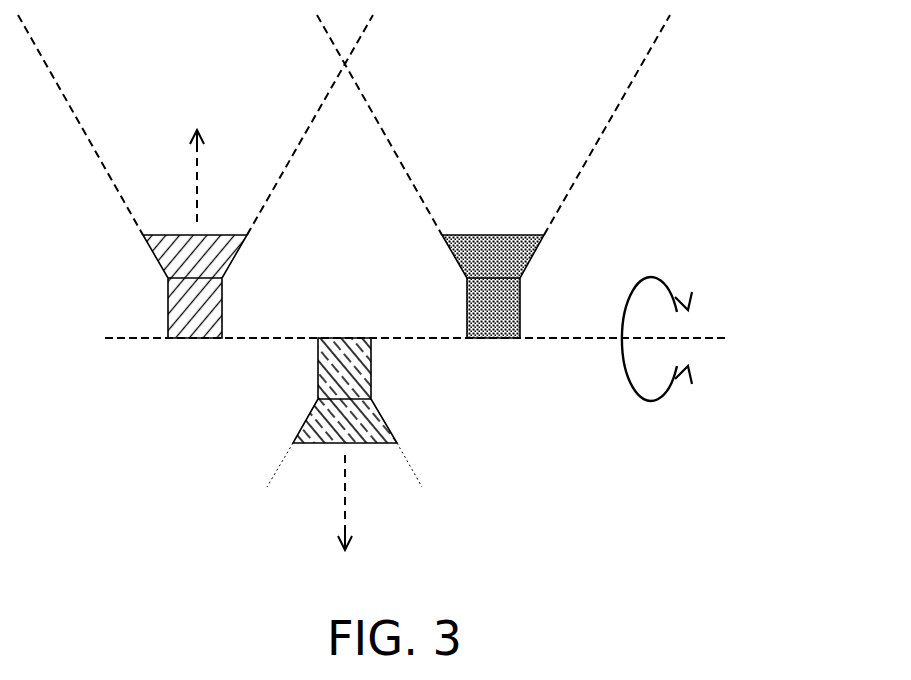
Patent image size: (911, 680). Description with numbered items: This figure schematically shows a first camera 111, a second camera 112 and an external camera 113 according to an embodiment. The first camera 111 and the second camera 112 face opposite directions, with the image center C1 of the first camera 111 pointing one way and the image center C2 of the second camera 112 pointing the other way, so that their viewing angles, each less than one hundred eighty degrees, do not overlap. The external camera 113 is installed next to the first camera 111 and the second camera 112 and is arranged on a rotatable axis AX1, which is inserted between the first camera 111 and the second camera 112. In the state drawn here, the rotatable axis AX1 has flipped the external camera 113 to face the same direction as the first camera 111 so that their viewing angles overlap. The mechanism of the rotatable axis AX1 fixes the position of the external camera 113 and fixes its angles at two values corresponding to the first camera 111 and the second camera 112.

The first camera 111 is at (178, 312).
The second camera 112 is at (322, 378).
The external camera 113 is at (478, 309).
The image center of the first camera C1 is at (197, 163).
The image center of the second camera C2 is at (345, 518).
The rotatable axis AX1 is at (700, 338).